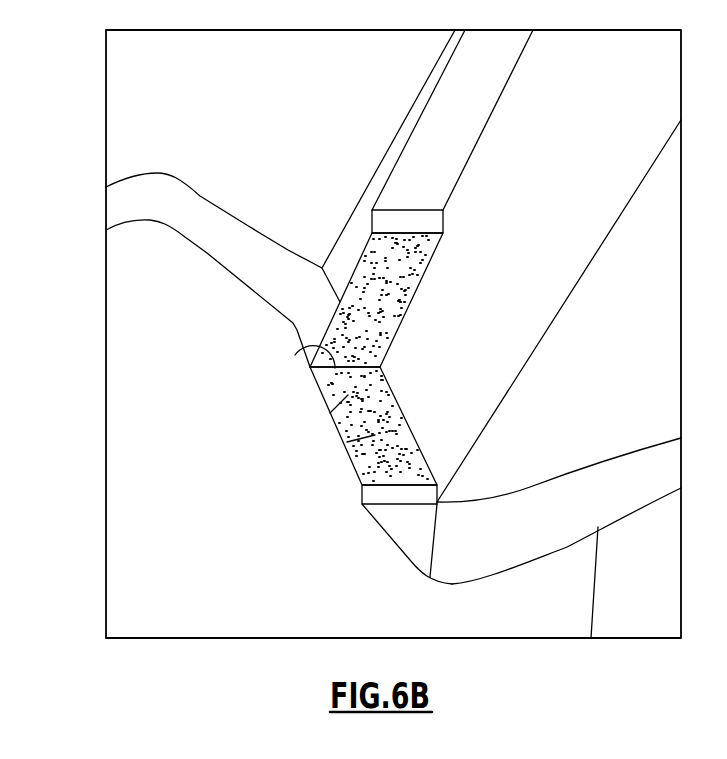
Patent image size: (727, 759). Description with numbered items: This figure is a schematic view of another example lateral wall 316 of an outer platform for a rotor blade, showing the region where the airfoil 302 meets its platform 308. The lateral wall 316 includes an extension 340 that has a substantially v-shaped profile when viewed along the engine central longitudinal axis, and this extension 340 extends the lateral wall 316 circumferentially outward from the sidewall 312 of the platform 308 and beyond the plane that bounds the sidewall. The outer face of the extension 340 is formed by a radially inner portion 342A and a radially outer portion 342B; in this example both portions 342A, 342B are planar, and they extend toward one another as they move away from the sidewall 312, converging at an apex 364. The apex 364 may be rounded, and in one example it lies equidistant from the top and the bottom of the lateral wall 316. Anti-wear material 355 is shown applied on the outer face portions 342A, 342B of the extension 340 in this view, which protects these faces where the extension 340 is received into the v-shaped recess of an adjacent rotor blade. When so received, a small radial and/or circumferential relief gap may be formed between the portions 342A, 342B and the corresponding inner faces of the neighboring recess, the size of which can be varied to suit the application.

The airfoil 302 is at (142, 520).
The platform 308 is at (253, 118).
The sidewall 312 is at (218, 240).
The lateral wall 316 is at (558, 247).
The extension 340 is at (400, 348).
The radially inner portion 342A is at (412, 417).
The radially outer portion 342B is at (413, 303).
The anti-wear material 355 is at (330, 413).
The apex 364 is at (295, 355).